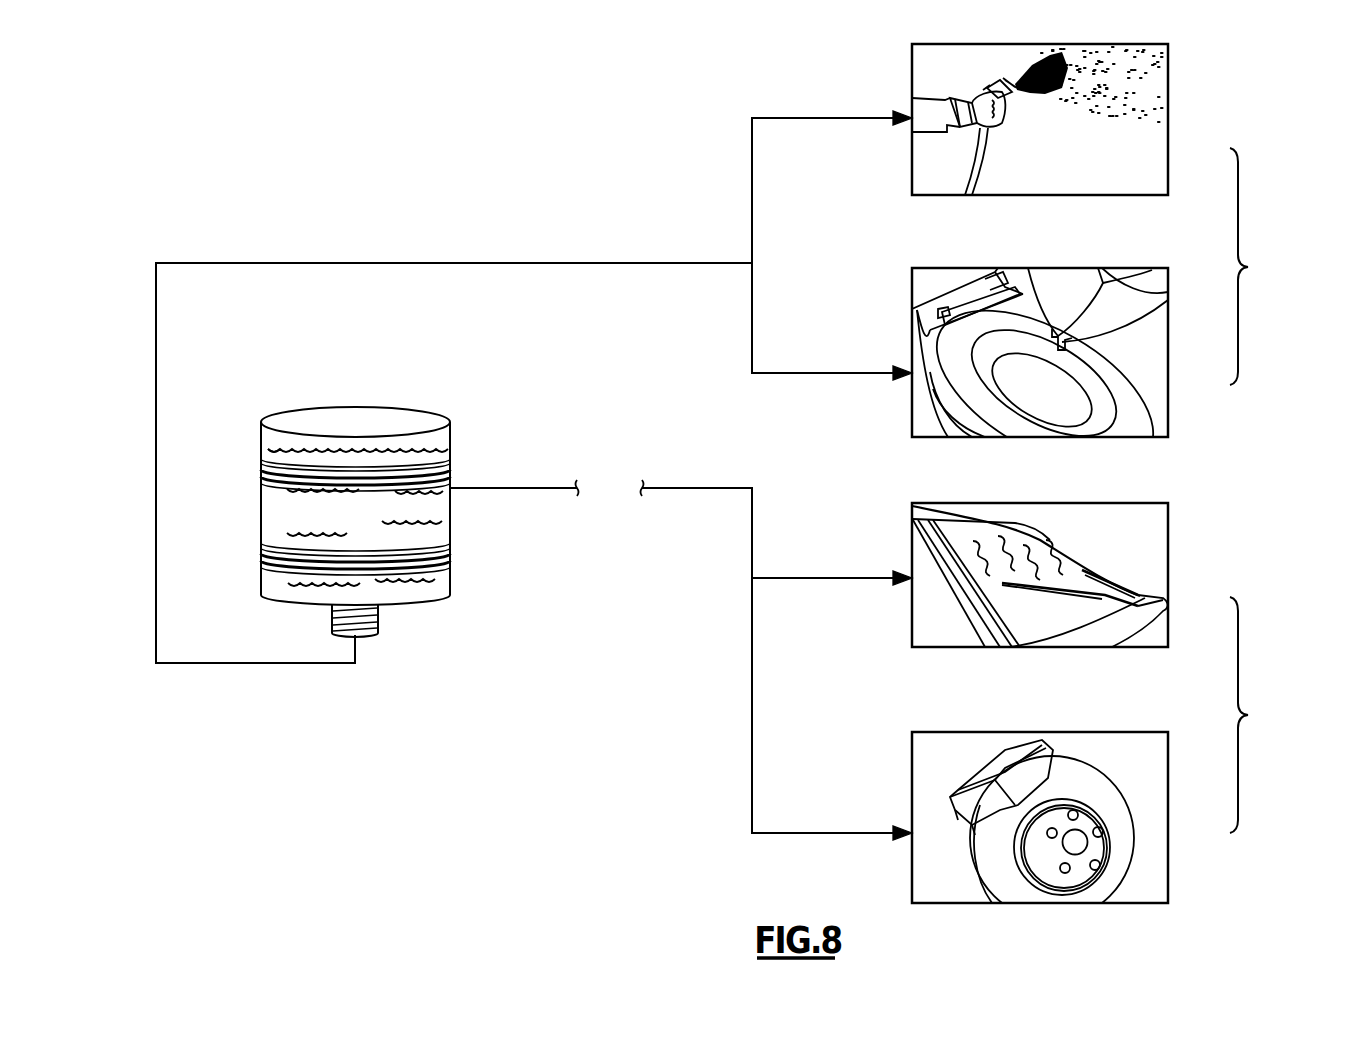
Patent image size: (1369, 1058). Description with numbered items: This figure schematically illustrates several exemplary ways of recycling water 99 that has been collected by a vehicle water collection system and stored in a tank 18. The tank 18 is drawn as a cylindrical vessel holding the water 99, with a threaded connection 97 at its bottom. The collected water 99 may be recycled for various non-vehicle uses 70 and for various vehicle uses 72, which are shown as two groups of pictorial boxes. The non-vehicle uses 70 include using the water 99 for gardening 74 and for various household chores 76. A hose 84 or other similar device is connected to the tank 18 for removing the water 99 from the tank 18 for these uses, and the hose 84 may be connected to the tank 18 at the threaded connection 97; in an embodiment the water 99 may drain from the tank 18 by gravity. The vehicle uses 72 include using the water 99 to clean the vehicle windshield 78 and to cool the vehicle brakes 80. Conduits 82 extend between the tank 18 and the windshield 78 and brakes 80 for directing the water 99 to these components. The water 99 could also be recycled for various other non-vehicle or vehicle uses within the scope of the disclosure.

The tank 18 is at (301, 417).
The water 99 is at (421, 448).
The threaded connection 97 is at (380, 624).
The hose 84 is at (518, 262).
The conduits 82 is at (512, 487).
The non-vehicle uses 70 is at (1248, 267).
The vehicle uses 72 is at (1248, 715).
The gardening 74 is at (1156, 115).
The household chores 76 is at (1130, 322).
The vehicle windshield 78 is at (1120, 569).
The vehicle brakes 80 is at (1120, 786).